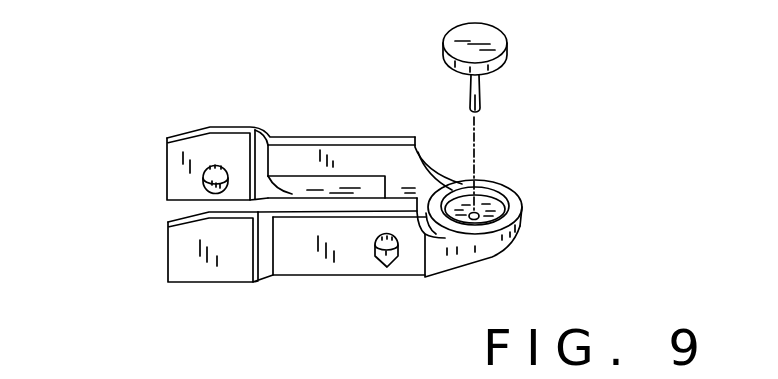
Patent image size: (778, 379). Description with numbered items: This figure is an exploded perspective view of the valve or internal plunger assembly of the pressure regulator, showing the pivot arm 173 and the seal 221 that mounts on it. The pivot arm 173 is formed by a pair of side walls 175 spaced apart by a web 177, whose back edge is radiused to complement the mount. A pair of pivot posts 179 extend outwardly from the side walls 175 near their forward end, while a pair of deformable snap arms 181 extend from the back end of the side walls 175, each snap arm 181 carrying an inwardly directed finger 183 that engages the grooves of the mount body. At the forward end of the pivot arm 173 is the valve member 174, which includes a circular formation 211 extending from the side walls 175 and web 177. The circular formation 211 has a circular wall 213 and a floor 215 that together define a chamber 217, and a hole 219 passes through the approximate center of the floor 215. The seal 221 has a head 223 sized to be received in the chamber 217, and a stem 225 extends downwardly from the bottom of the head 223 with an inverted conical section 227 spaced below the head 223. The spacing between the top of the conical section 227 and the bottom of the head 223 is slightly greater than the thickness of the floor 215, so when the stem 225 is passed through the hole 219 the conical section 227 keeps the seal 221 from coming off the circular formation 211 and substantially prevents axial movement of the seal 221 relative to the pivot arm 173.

The pivot arm 173 is at (362, 131).
The valve member 174 is at (534, 228).
The side walls 175 is at (308, 136).
The web 177 is at (290, 190).
The pivot posts 179 is at (393, 265).
The snap arms 181 is at (190, 131).
The finger 183 is at (203, 180).
The circular formation 211 is at (527, 176).
The circular wall 213 is at (522, 208).
The floor 215 is at (478, 204).
The chamber 217 is at (521, 209).
The hole 219 is at (480, 220).
The seal 221 is at (512, 36).
The head 223 is at (498, 24).
The stem 225 is at (460, 100).
The inverted conical section 227 is at (482, 85).